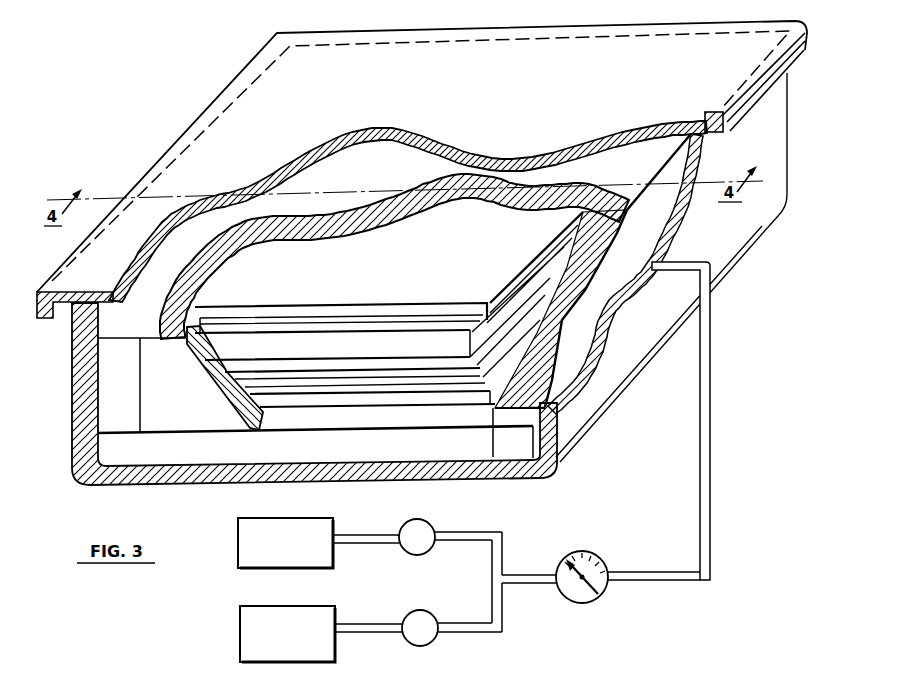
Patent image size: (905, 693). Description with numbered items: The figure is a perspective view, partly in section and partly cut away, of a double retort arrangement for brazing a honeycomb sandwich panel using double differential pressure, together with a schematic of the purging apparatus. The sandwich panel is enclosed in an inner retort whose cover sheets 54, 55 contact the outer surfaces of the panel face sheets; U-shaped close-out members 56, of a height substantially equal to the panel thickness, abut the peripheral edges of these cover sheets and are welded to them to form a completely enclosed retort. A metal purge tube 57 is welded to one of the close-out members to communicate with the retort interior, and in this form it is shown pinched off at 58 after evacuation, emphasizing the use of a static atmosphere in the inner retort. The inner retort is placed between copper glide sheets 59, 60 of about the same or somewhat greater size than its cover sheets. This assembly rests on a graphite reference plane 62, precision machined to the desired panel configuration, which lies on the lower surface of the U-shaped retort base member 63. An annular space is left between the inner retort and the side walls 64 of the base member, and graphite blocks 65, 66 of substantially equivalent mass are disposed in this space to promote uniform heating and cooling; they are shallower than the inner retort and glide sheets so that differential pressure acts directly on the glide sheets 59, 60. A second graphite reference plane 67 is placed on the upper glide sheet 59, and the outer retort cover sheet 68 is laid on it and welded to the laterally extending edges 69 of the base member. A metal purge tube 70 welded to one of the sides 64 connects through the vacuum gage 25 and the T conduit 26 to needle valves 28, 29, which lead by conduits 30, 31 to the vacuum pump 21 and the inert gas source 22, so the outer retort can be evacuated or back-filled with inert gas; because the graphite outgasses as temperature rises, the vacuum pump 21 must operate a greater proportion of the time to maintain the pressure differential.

The vacuum pump 21 is at (246, 550).
The inert gas source 22 is at (335, 623).
The vacuum gage 25 is at (577, 600).
The T conduit 26 is at (499, 555).
The needle valve 28 is at (406, 524).
The needle valve 29 is at (407, 641).
The conduit 30 is at (358, 545).
The conduit 31 is at (369, 626).
The inner retort cover sheet 54 is at (317, 329).
The inner retort cover sheet 55 is at (333, 383).
The U-shaped close-out member 56 is at (348, 353).
The metal purge tube 57 is at (570, 272).
The pinch-off 58 is at (567, 266).
The copper glide sheet 59 is at (394, 256).
The copper glide sheet 60 is at (413, 393).
The graphite reference plane 62 is at (423, 448).
The retort base member 63 is at (236, 499).
The side walls 64 is at (780, 131).
The graphite block 65 is at (113, 362).
The graphite block 66 is at (170, 402).
The graphite reference plane 67 is at (328, 170).
The outer retort cover sheet 68 is at (422, 156).
The laterally extending edges 69 is at (61, 318).
The metal purge tube 70 is at (686, 258).